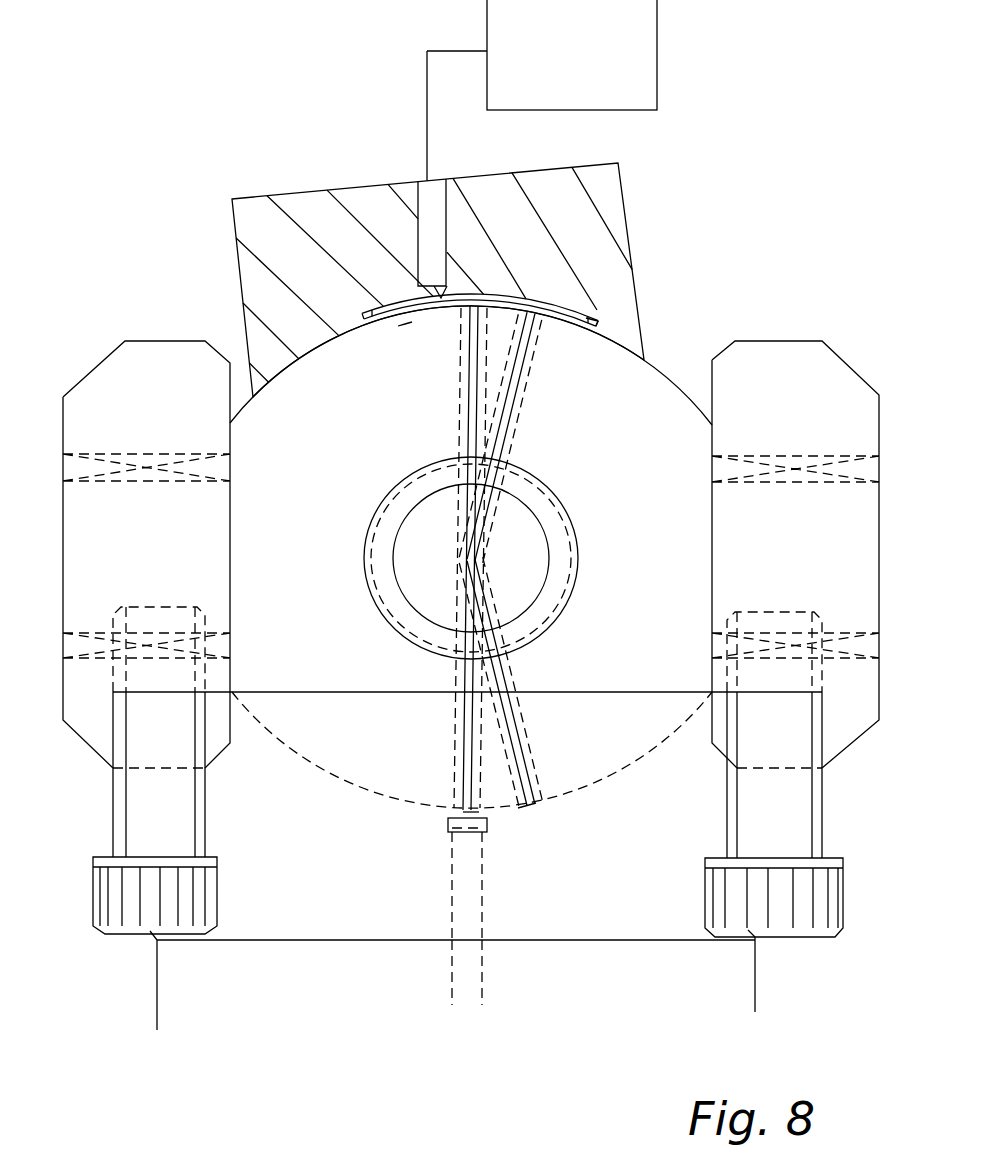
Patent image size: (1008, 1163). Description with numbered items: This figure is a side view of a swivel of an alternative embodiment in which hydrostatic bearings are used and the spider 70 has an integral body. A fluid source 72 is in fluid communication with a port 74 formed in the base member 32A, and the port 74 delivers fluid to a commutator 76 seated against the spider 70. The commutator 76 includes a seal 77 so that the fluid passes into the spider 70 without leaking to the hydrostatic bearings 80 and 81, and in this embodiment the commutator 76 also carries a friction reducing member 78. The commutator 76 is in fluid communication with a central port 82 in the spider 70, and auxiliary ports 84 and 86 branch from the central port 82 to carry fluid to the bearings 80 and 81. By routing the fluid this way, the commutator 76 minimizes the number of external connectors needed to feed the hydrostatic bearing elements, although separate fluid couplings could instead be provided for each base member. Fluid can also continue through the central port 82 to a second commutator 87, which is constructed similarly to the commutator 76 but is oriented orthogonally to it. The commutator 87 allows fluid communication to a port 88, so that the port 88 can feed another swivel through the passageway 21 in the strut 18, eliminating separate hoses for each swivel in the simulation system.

The strut 18 is at (755, 966).
The passageway 21 is at (487, 968).
The base member 32A is at (632, 237).
The spider 70 is at (659, 374).
The fluid source 72 is at (657, 49).
The port 74 is at (404, 188).
The commutator 76 is at (368, 312).
The seal 77 is at (523, 316).
The friction reducing member 78 is at (548, 324).
The hydrostatic bearing 80 is at (410, 329).
The hydrostatic bearing 81 is at (457, 792).
The central port 82 is at (466, 388).
The auxiliary port 84 is at (516, 398).
The auxiliary port 86 is at (503, 672).
The commutator 87 is at (447, 826).
The port 88 is at (484, 858).